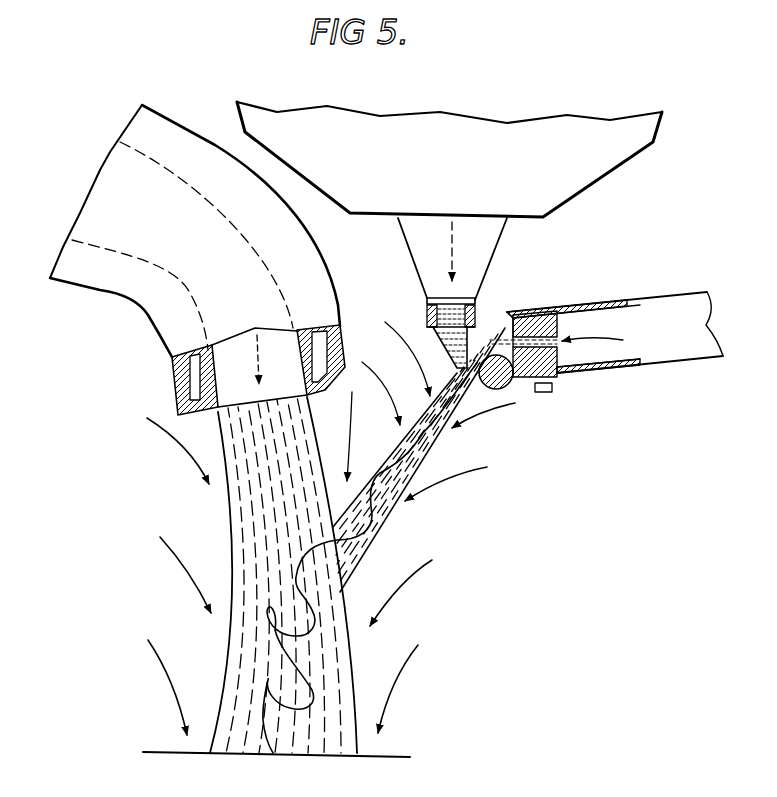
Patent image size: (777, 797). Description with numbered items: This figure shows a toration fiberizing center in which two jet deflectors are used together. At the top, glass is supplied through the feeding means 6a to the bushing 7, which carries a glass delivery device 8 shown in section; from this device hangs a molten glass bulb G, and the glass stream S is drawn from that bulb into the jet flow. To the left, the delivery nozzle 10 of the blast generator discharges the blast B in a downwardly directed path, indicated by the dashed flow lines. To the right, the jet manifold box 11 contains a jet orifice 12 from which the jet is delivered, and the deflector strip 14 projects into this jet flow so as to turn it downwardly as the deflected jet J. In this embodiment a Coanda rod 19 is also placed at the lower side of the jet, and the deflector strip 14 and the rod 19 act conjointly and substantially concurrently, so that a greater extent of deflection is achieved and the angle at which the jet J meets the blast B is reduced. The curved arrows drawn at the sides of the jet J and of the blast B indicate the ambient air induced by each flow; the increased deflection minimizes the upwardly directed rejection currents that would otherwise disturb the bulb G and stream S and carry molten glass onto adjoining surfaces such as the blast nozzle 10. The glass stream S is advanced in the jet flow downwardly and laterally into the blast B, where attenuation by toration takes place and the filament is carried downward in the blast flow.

The delivery nozzle 10 is at (115, 184).
The feeding means 6a is at (607, 162).
The bushing 7 is at (404, 228).
The glass delivery device 8 is at (484, 324).
The jet manifold box 11 is at (670, 348).
The jet orifice 12 is at (508, 312).
The deflector strip 14 is at (530, 332).
The Coanda rod 19 is at (505, 381).
The molten glass bulb G is at (440, 335).
The blast B is at (238, 504).
The deflected jet J is at (380, 521).
The glass stream S is at (430, 457).